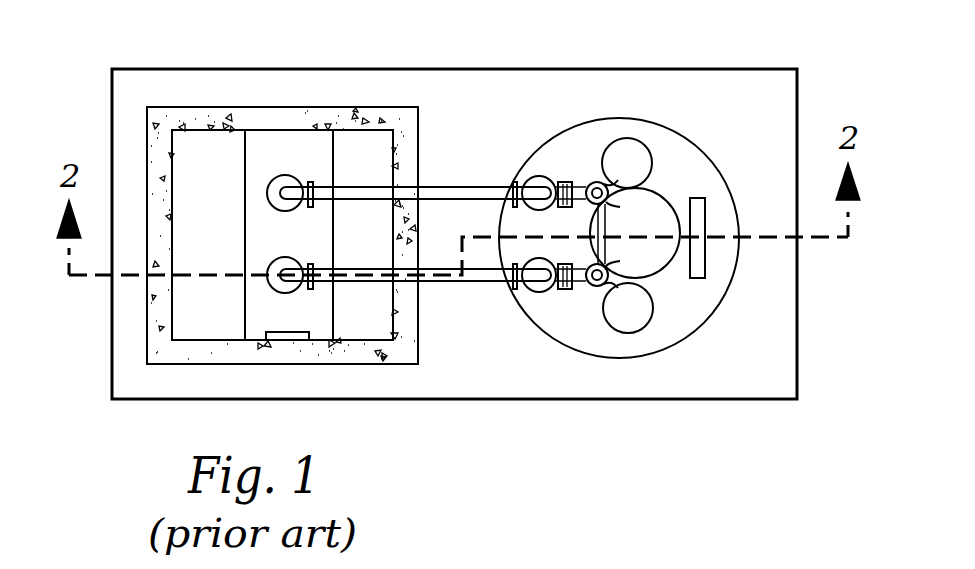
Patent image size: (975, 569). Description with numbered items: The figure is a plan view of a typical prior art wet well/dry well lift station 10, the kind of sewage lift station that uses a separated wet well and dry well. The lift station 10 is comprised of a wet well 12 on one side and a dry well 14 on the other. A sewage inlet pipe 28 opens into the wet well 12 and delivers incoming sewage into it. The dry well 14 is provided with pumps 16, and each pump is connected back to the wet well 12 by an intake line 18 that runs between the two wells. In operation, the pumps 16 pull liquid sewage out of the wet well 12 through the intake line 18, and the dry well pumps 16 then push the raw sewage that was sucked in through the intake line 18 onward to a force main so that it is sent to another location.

The wet well/dry well lift station 10 is at (128, 22).
The wet well 12 is at (162, 300).
The dry well 14 is at (768, 277).
The pumps 16 is at (632, 150).
The intake line 18 is at (472, 192).
The sewage inlet pipe 28 is at (295, 340).